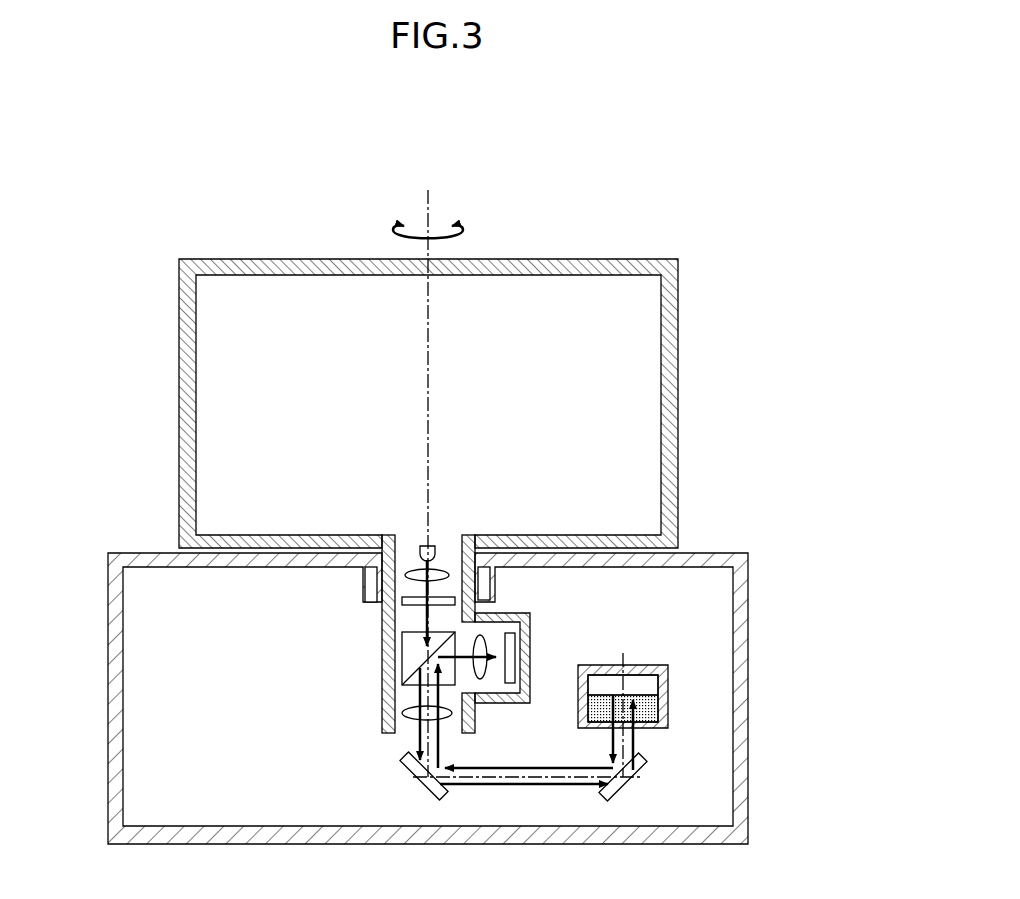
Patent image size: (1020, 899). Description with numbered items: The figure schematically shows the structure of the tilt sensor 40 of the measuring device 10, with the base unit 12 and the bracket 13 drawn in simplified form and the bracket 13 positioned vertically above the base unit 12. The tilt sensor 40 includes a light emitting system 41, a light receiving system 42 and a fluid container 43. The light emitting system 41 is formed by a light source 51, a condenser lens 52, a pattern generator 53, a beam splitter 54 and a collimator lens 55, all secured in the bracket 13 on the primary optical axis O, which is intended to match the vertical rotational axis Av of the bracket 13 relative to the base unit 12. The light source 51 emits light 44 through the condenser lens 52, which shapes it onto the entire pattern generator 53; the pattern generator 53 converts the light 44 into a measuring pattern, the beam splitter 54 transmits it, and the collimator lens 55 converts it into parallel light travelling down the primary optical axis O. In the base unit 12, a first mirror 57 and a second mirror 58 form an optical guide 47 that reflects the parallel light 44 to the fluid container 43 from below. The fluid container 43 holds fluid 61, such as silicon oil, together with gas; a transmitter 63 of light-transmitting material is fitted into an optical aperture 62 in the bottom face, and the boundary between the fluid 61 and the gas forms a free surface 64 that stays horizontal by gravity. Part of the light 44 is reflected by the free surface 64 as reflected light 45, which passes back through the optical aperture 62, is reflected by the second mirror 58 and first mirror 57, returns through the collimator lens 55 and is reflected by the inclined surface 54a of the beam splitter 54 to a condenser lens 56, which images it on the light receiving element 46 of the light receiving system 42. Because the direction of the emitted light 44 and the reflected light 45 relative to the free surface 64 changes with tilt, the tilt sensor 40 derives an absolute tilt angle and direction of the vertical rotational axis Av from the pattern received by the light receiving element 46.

The measuring device 10 is at (661, 181).
The base unit 12 is at (140, 552).
The bracket 13 is at (178, 403).
The tilt sensor 40 is at (656, 591).
The light emitting system 41 is at (410, 617).
The light receiving system 42 is at (455, 700).
The fluid container 43 is at (666, 658).
The light 44 is at (400, 586).
The reflected light 45 is at (476, 690).
The light receiving element 46 is at (517, 634).
The optical guide 47 is at (482, 800).
The light source 51 is at (425, 545).
The condenser lens 52 is at (446, 571).
The pattern generator 53 is at (402, 600).
The beam splitter 54 is at (402, 653).
The inclined surface 54a is at (422, 660).
The collimator lens 55 is at (403, 715).
The condenser lens 56 is at (481, 635).
The first mirror 57 is at (402, 795).
The second mirror 58 is at (634, 785).
The fluid 61 is at (647, 710).
The optical aperture 62 is at (608, 695).
The transmitter 63 is at (640, 722).
The free surface 64 is at (643, 690).
The vertical rotational axis Av is at (428, 200).
The primary optical axis O is at (426, 744).